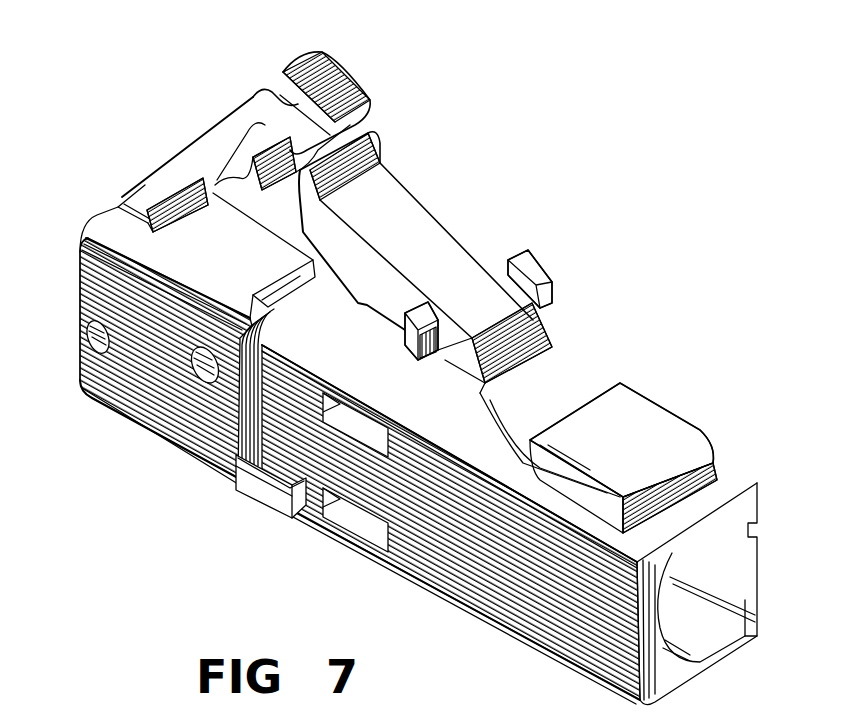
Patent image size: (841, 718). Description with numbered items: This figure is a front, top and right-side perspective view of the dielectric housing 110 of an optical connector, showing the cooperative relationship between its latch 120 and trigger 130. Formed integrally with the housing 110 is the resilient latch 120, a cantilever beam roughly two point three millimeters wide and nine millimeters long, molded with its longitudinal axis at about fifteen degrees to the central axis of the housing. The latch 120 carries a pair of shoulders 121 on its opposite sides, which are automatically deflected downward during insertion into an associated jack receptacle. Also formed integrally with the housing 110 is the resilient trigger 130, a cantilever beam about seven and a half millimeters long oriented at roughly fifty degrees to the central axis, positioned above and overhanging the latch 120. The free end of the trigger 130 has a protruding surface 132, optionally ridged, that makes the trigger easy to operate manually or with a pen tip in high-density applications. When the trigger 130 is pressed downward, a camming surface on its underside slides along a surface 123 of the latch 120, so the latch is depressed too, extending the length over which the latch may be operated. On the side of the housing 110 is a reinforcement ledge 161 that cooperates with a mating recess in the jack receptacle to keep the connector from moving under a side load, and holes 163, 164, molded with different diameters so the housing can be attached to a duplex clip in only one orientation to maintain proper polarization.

The housing 110 is at (682, 298).
The latch 120 is at (508, 312).
The shoulders 121 is at (517, 267).
The surface of the latch 123 is at (372, 133).
The trigger 130 is at (250, 121).
The protruding surface 132 is at (307, 65).
The reinforcement ledge 161 is at (280, 474).
The hole 163 is at (213, 372).
The hole 164 is at (98, 337).